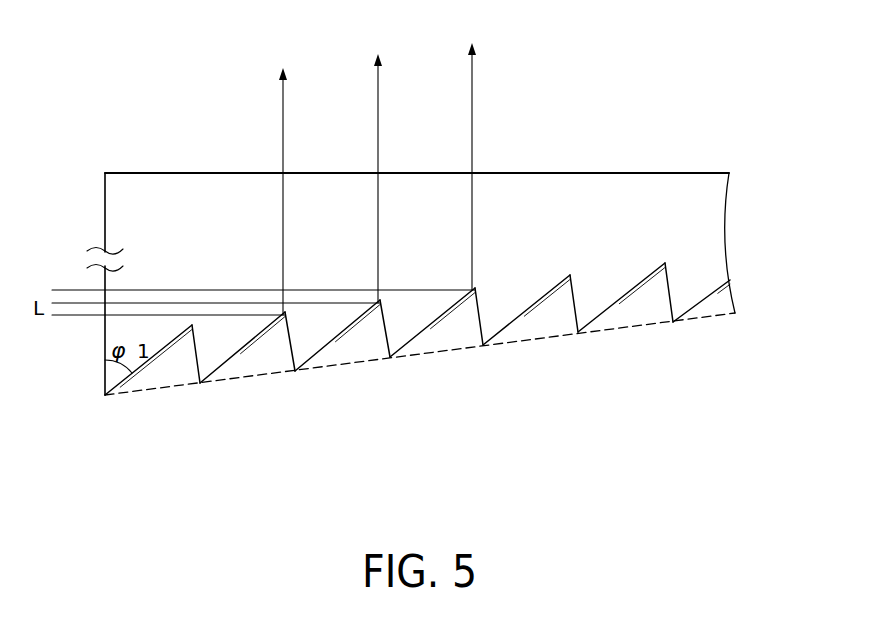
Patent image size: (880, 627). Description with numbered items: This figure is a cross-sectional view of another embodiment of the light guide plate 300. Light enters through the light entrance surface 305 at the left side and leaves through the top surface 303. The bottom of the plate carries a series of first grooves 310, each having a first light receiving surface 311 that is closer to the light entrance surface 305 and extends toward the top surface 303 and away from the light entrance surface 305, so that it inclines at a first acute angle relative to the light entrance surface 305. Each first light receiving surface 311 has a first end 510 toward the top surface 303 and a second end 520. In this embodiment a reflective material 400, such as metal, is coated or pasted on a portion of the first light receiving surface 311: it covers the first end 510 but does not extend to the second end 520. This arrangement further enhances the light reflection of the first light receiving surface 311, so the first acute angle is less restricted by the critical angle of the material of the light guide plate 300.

The light guide plate 300 is at (120, 84).
The top surface 303 is at (142, 173).
The light entrance surface 305 is at (105, 215).
The first groove 310 is at (552, 321).
The first light receiving surface 311 is at (513, 323).
The reflective material 400 is at (450, 313).
The first end 510 is at (570, 275).
The second end 520 is at (477, 300).